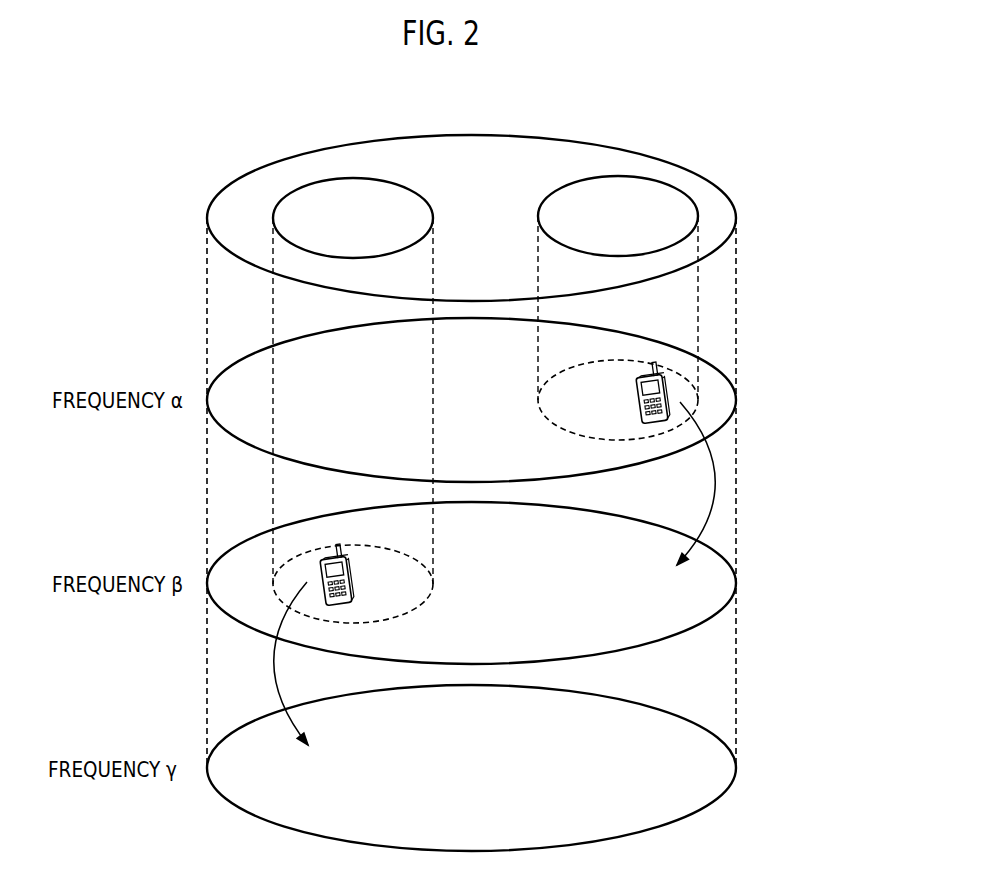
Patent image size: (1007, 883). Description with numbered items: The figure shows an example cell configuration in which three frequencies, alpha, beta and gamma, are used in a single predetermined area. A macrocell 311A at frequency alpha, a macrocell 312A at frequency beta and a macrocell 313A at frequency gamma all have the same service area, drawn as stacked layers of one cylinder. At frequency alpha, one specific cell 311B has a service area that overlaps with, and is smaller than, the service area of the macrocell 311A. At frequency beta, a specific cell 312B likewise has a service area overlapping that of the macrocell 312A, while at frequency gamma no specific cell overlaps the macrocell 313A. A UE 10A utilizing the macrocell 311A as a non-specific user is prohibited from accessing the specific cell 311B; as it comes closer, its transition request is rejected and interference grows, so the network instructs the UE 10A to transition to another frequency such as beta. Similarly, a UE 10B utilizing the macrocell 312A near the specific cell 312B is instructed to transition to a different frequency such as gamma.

The macrocell 311A is at (628, 128).
The macrocell 312A is at (723, 548).
The macrocell 313A is at (723, 732).
The specific cell 311B is at (545, 198).
The specific cell 312B is at (413, 187).
The UE 10A is at (637, 394).
The UE 10B is at (353, 574).